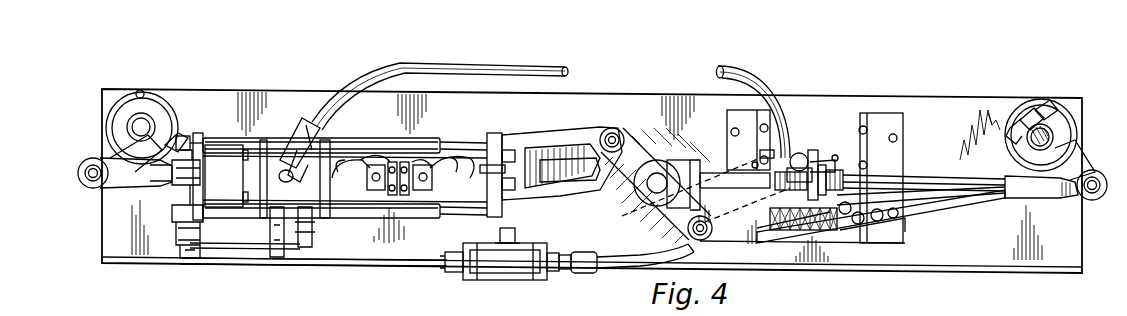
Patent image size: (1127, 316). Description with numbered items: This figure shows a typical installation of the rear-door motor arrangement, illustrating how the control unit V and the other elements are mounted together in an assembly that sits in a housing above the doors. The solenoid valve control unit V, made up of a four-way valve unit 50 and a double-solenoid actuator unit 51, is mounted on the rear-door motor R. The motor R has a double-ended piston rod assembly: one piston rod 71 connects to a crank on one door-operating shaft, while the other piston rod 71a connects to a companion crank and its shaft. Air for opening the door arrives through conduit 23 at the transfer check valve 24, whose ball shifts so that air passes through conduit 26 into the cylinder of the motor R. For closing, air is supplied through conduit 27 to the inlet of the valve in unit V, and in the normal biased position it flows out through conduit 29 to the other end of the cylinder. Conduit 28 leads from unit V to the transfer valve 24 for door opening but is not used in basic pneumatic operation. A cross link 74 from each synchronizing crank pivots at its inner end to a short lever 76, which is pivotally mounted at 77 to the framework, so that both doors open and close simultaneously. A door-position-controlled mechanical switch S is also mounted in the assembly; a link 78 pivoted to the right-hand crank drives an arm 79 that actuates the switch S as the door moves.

The conduit 23 is at (620, 268).
The transfer check valve 24 is at (500, 277).
The conduit 26 is at (505, 233).
The conduit 27 is at (522, 68).
The conduit 28 is at (338, 267).
The conduit 29 is at (237, 249).
The four-way valve unit 50 is at (278, 147).
The double-solenoid actuator unit 51 is at (370, 185).
The piston rod 71 is at (586, 172).
The piston rod 71a is at (122, 182).
The cross link 74 is at (578, 140).
The short lever 76 is at (688, 208).
The pivot 77 is at (655, 190).
The link 78 is at (957, 196).
The arm 79 is at (880, 180).
The rear-door motor R is at (226, 176).
The mechanical switch S is at (906, 122).
The control unit V is at (256, 146).